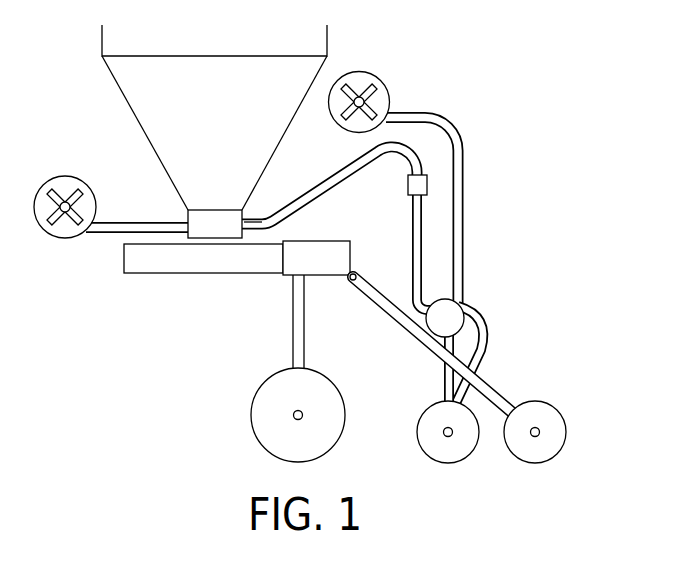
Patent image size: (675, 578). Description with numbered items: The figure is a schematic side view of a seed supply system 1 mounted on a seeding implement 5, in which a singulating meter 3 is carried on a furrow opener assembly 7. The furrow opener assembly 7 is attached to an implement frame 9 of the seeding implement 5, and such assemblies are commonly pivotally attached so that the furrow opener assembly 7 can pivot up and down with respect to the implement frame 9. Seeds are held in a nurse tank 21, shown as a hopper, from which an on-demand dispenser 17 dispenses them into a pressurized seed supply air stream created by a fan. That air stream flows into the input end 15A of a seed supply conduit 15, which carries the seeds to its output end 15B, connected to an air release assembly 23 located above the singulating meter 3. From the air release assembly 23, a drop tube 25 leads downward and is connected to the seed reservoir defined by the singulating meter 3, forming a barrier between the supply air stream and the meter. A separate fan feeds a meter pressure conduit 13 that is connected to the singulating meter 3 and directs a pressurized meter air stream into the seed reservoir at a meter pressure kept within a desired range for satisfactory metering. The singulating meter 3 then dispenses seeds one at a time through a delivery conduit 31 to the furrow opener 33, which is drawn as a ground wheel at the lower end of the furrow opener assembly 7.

The seed supply system 1 is at (540, 173).
The singulating meter 3 is at (462, 303).
The seeding implement 5 is at (100, 291).
The furrow opener assembly 7 is at (495, 386).
The implement frame 9 is at (220, 274).
The meter pressure conduit 13 is at (462, 216).
The seed supply conduit 15 is at (318, 195).
The input end 15A is at (250, 219).
The output end 15B is at (406, 170).
The on-demand dispenser 17 is at (188, 212).
The nurse tank 21 is at (120, 92).
The air release assembly 23 is at (430, 182).
The drop tube 25 is at (413, 258).
The delivery conduit 31 is at (487, 337).
The furrow opener 33 is at (466, 456).